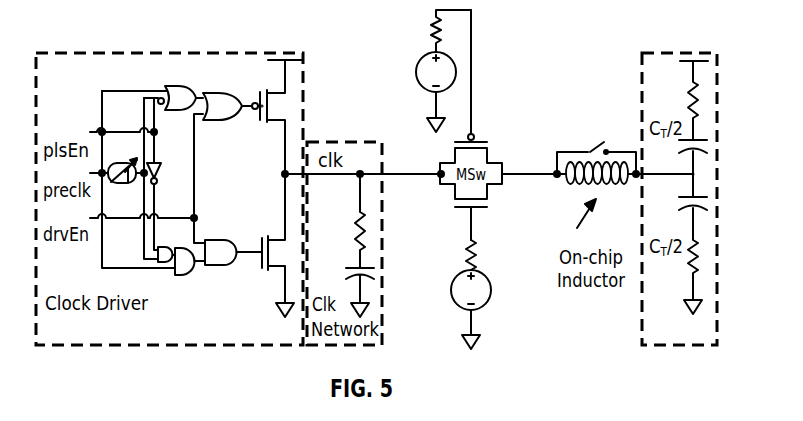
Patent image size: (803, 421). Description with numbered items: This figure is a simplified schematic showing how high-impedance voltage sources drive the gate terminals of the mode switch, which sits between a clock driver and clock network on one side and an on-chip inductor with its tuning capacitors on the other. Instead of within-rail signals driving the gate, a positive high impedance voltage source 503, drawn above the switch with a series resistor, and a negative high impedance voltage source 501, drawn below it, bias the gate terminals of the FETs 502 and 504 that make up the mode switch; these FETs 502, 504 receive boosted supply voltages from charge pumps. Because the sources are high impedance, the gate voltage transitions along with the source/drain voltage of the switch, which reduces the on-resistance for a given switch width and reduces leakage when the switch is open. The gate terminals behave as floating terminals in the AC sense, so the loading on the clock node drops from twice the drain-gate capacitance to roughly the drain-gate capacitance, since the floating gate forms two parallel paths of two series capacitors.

The high impedance voltage source Vgn 501 is at (490, 293).
The FET 502 is at (478, 138).
The high impedance voltage source Vgp 503 is at (418, 58).
The FET 504 is at (484, 209).